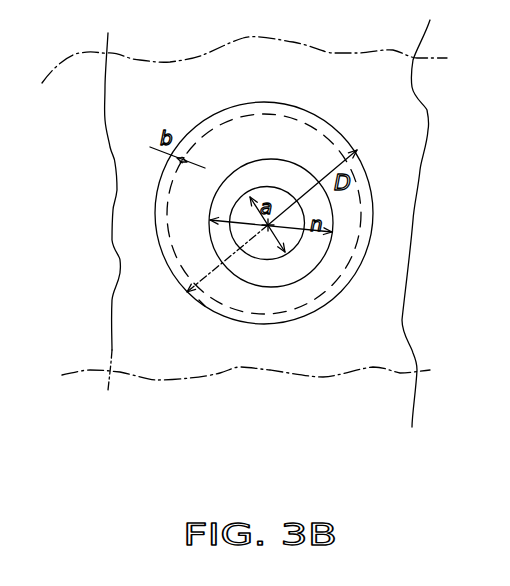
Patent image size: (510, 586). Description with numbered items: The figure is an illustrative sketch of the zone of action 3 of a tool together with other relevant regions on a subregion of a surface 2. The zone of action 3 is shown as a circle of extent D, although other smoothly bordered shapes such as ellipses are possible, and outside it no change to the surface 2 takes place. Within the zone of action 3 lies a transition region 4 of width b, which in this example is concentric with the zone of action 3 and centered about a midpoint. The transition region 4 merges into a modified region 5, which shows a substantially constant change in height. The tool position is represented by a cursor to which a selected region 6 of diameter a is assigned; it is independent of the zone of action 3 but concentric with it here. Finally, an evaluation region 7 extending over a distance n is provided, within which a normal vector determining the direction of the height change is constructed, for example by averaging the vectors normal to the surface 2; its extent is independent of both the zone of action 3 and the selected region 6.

The surface 2 is at (385, 345).
The zone of action 3 is at (290, 320).
The transition region 4 is at (253, 258).
The modified region 5 is at (193, 253).
The selected region 6 is at (255, 256).
The evaluation region 7 is at (273, 290).